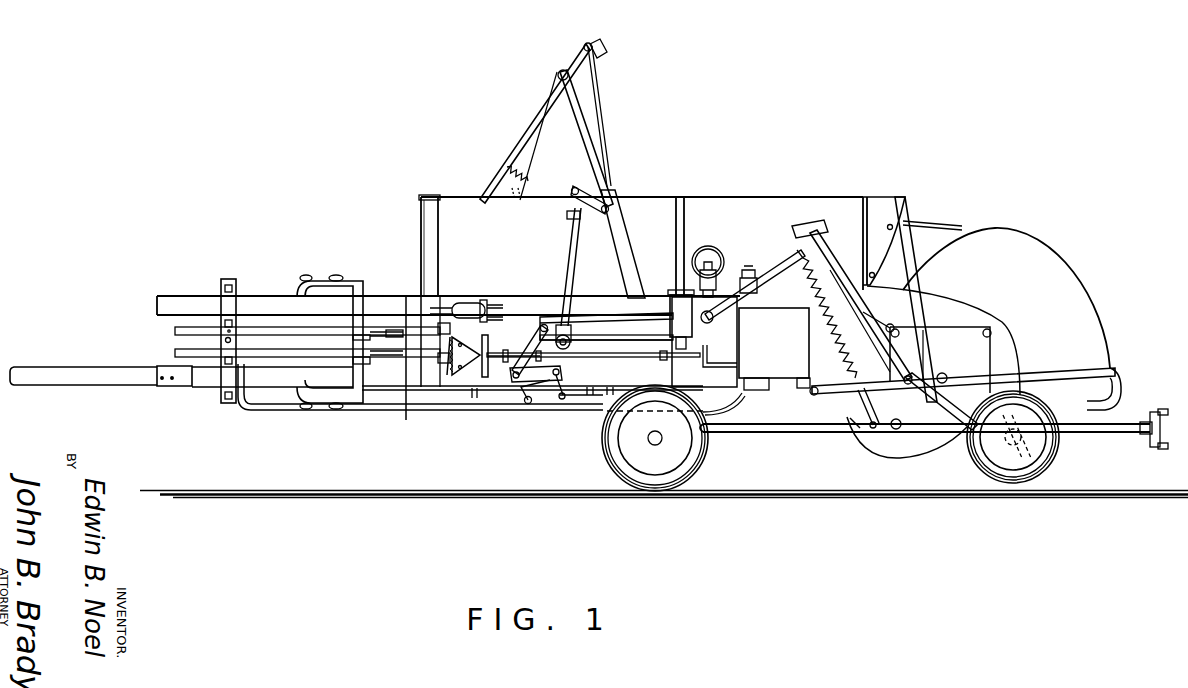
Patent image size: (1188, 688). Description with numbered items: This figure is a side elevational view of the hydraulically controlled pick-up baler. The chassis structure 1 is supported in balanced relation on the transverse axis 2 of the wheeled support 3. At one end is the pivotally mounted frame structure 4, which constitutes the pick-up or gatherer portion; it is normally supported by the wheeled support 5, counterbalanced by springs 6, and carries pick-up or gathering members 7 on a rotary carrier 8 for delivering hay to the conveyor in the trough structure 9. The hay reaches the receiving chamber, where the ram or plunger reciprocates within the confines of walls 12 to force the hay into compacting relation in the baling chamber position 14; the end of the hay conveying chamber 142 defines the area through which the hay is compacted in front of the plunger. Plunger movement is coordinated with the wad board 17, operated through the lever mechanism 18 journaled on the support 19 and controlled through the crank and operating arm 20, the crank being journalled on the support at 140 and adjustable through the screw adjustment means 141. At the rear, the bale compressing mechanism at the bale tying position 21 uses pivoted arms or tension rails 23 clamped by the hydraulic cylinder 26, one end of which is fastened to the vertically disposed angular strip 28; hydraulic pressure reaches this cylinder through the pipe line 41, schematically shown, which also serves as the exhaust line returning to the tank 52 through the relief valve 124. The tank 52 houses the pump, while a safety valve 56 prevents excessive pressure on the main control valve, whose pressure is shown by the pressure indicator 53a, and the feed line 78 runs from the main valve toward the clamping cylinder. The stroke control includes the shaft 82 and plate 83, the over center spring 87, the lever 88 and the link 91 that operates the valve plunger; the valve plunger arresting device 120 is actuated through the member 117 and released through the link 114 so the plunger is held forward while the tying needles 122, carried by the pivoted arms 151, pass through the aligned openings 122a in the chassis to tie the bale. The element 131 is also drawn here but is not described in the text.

The chassis structure 1 is at (140, 425).
The transverse axis 2 is at (647, 447).
The wheeled support 3 is at (697, 458).
The pivotally mounted frame structure 4 is at (842, 388).
The wheeled support 5 is at (1022, 467).
The springs 6 is at (833, 300).
The pick-up or gathering members 7 is at (872, 317).
The rotary carrier 8 is at (932, 418).
The trough structure 9 is at (780, 208).
The walls 12 is at (412, 390).
The baling chamber position 14 is at (518, 312).
The wad board 17 is at (500, 170).
The lever mechanism 18 is at (583, 118).
The support 19 is at (635, 210).
The crank and operating arm 20 is at (603, 187).
The bale compressing mechanism at bale tying position 21 is at (262, 314).
The arms (pivoted tension rails) 23 is at (173, 353).
The hydraulic cylinder 26 is at (222, 330).
The vertically disposed angular member or strip 28 is at (223, 300).
The pipe line 41 is at (269, 412).
The tank 52 is at (782, 367).
The pressure indicator 53a is at (705, 250).
The safety valve 56 is at (720, 292).
The feed line 78 is at (668, 303).
The shaft 82 is at (610, 357).
The plate 83 is at (487, 343).
The spring 87 is at (487, 365).
The lever 88 is at (552, 330).
The link 91 is at (587, 323).
The link 114 is at (572, 395).
The member 117 is at (527, 407).
The valve plunger arresting device 120 is at (515, 400).
The tying needles 122 is at (398, 332).
The aligned openings 122a is at (428, 312).
The relief valve 124 is at (745, 300).
The bar 131 is at (603, 343).
The journal of crank on support 140 is at (615, 205).
The screw adjustment means 141 is at (582, 273).
The end of hay conveying chamber 142 is at (430, 203).
The arms 151 is at (317, 280).